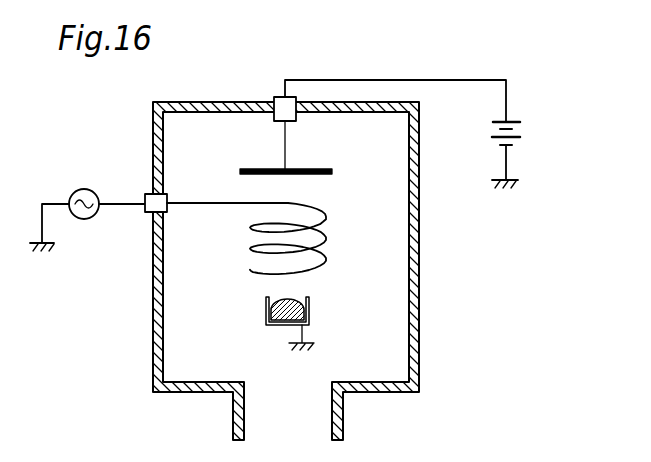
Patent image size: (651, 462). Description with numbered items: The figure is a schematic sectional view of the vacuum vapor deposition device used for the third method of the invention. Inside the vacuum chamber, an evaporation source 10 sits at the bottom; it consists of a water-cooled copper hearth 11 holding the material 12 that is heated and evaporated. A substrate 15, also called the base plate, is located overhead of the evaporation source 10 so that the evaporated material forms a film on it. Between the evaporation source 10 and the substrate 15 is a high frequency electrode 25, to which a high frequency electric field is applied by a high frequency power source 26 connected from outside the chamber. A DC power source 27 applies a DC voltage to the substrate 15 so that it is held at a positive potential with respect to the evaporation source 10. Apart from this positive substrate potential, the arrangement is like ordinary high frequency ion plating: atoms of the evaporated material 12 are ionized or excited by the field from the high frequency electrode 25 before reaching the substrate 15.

The evaporation source 10 is at (341, 332).
The water-cooled copper hearth 11 is at (265, 320).
The material 12 is at (300, 297).
The substrate 15 is at (311, 167).
The high frequency electrode 25 is at (320, 208).
The high frequency power source 26 is at (84, 187).
The DC power source 27 is at (524, 141).